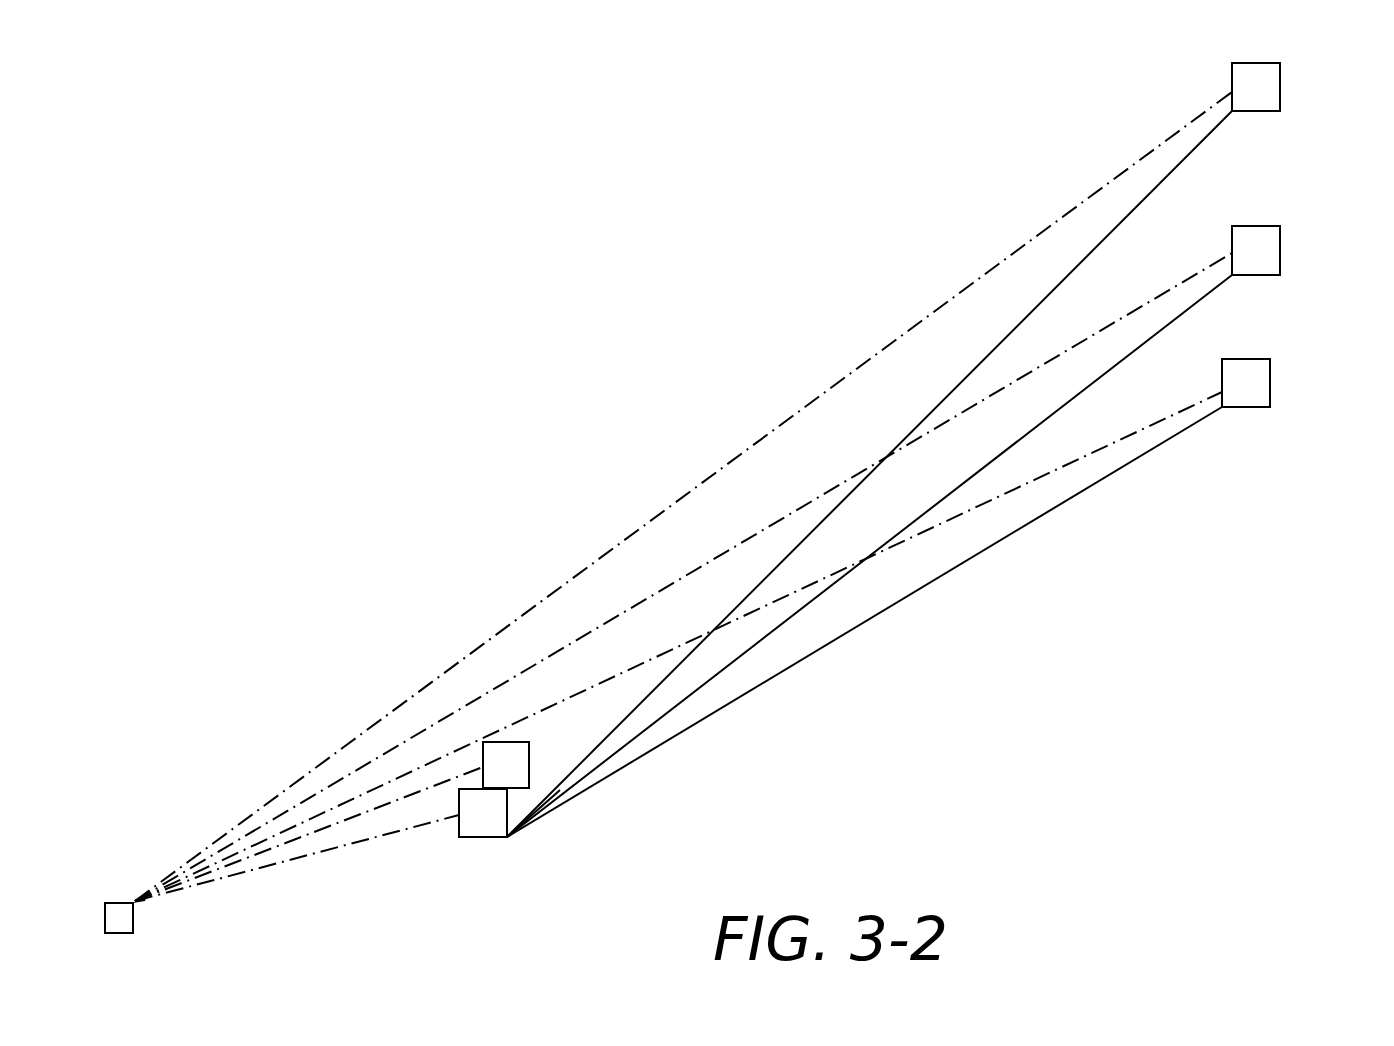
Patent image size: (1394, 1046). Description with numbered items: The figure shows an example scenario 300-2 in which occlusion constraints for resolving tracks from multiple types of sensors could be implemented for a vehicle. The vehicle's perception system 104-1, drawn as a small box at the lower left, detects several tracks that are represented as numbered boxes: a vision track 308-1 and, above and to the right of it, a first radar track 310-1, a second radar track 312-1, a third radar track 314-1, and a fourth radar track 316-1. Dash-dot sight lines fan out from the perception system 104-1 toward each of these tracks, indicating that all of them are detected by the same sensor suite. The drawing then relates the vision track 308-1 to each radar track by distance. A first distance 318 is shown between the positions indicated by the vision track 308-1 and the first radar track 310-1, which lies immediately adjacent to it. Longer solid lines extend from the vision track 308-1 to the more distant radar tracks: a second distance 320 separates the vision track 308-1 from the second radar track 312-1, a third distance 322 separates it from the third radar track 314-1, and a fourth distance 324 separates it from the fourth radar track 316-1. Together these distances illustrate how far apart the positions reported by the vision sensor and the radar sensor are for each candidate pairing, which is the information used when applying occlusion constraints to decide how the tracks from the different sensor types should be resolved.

The perception system 104-1 is at (133, 933).
The vision track 308-1 is at (459, 837).
The first radar track 310-1 is at (529, 742).
The second radar track 312-1 is at (1270, 359).
The third radar track 314-1 is at (1280, 226).
The fourth radar track 316-1 is at (1280, 63).
The first distance 318 is at (523, 797).
The second distance 320 is at (973, 557).
The third distance 322 is at (1098, 379).
The fourth distance 324 is at (1105, 240).
The scene configuration 300-2 is at (435, 266).